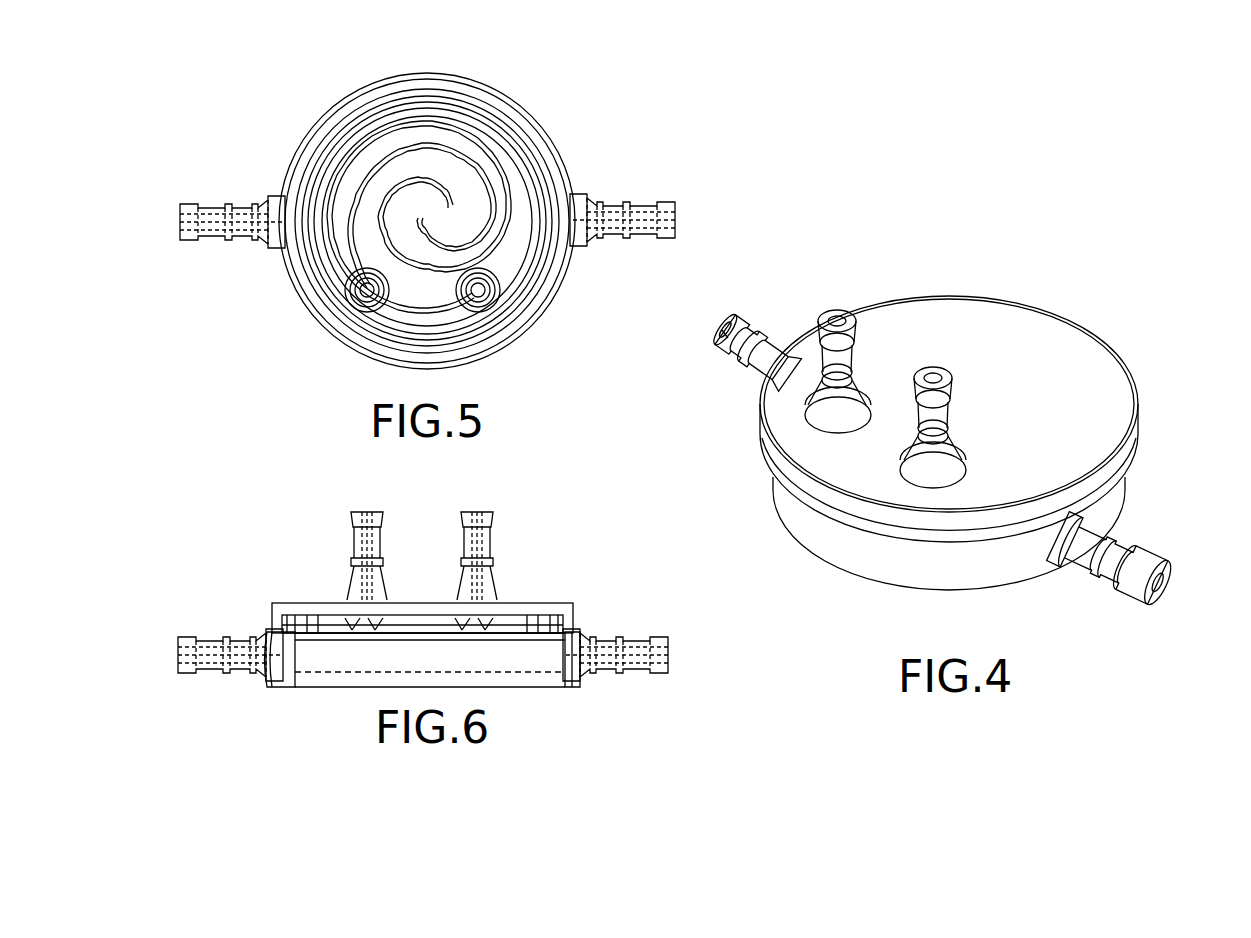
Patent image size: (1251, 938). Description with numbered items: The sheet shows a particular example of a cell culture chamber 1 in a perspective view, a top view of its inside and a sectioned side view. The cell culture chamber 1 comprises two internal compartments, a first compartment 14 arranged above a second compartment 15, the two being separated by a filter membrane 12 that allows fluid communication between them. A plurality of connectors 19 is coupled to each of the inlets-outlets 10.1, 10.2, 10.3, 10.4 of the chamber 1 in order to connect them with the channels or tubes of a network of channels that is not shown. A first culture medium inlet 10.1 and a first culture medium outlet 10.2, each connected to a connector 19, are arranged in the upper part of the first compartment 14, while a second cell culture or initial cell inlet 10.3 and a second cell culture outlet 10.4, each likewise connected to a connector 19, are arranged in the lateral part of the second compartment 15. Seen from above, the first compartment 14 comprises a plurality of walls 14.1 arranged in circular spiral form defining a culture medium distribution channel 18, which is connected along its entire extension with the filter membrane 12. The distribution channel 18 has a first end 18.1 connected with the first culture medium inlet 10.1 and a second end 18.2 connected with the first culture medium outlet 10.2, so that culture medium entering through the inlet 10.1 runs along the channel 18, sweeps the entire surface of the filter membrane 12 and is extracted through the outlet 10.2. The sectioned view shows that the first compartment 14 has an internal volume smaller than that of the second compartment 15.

In FIG. 5, the cell culture chamber 1 is at (561, 66).
In FIG. 6, the cell culture chamber 1 is at (452, 476).
In FIG. 4, the cell culture chamber 1 is at (1033, 248).
In FIG. 5, the first culture medium inlet 10.1 is at (350, 286).
In FIG. 6, the first culture medium inlet 10.1 is at (352, 525).
In FIG. 4, the first culture medium inlet 10.1 is at (762, 428).
In FIG. 5, the first culture medium outlet 10.2 is at (500, 293).
In FIG. 6, the first culture medium outlet 10.2 is at (494, 524).
In FIG. 4, the first culture medium outlet 10.2 is at (964, 472).
In FIG. 5, the second cell culture or initial cell inlet 10.3 is at (243, 245).
In FIG. 6, the second cell culture or initial cell inlet 10.3 is at (243, 656).
In FIG. 4, the second cell culture or initial cell inlet 10.3 is at (743, 391).
In FIG. 5, the second cell culture outlet 10.4 is at (637, 222).
In FIG. 6, the second cell culture outlet 10.4 is at (642, 663).
In FIG. 4, the second cell culture outlet 10.4 is at (1088, 584).
In FIG. 5, the filter membrane 12 is at (350, 173).
In FIG. 6, the filter membrane 12 is at (492, 635).
In FIG. 6, the first compartment 14 is at (510, 615).
In FIG. 4, the first compartment 14 is at (1133, 442).
In FIG. 5, the walls 14.1 is at (428, 185).
In FIG. 6, the walls 14.1 is at (307, 615).
In FIG. 6, the second compartment 15 is at (338, 682).
In FIG. 4, the second compartment 15 is at (832, 540).
In FIG. 5, the culture medium distribution channel 18 is at (505, 165).
In FIG. 6, the first end 18.1 is at (355, 614).
In FIG. 6, the second end 18.2 is at (500, 600).
In FIG. 4, the connector 19 is at (722, 330).